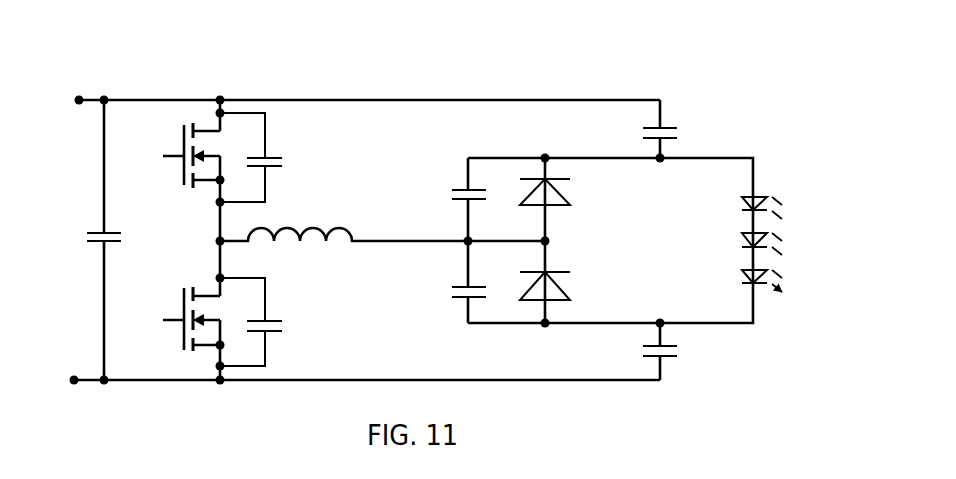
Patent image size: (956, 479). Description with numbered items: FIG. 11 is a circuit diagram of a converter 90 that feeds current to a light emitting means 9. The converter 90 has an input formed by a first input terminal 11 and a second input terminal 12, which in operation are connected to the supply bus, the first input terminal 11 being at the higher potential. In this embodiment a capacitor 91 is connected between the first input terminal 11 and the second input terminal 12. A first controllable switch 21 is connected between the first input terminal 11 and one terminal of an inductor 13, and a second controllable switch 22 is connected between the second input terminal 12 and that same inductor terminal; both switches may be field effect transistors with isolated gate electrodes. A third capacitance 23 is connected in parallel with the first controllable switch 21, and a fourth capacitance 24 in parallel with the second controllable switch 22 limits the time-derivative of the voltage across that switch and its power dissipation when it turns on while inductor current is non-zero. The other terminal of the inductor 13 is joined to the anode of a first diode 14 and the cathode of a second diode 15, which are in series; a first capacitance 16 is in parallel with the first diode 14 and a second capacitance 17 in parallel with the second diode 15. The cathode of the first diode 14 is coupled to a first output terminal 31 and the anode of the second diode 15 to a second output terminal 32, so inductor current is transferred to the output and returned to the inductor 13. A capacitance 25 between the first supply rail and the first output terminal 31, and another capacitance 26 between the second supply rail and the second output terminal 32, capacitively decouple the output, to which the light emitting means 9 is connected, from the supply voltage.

The converter 90 is at (105, 46).
The first input terminal 11 is at (77, 99).
The second input terminal 12 is at (73, 383).
The capacitor 91 is at (87, 233).
The first controllable switch 21 is at (165, 147).
The second controllable switch 22 is at (172, 337).
The third capacitance 23 is at (272, 158).
The fourth capacitance 24 is at (272, 321).
The inductor 13 is at (316, 231).
The first capacitance 16 is at (453, 190).
The second capacitance 17 is at (452, 287).
The first diode 14 is at (568, 202).
The second diode 15 is at (568, 296).
The capacitance 25 is at (643, 128).
The other capacitance 26 is at (647, 356).
The first output terminal 31 is at (663, 161).
The second output terminal 32 is at (664, 321).
The light emitting means 9 is at (766, 181).